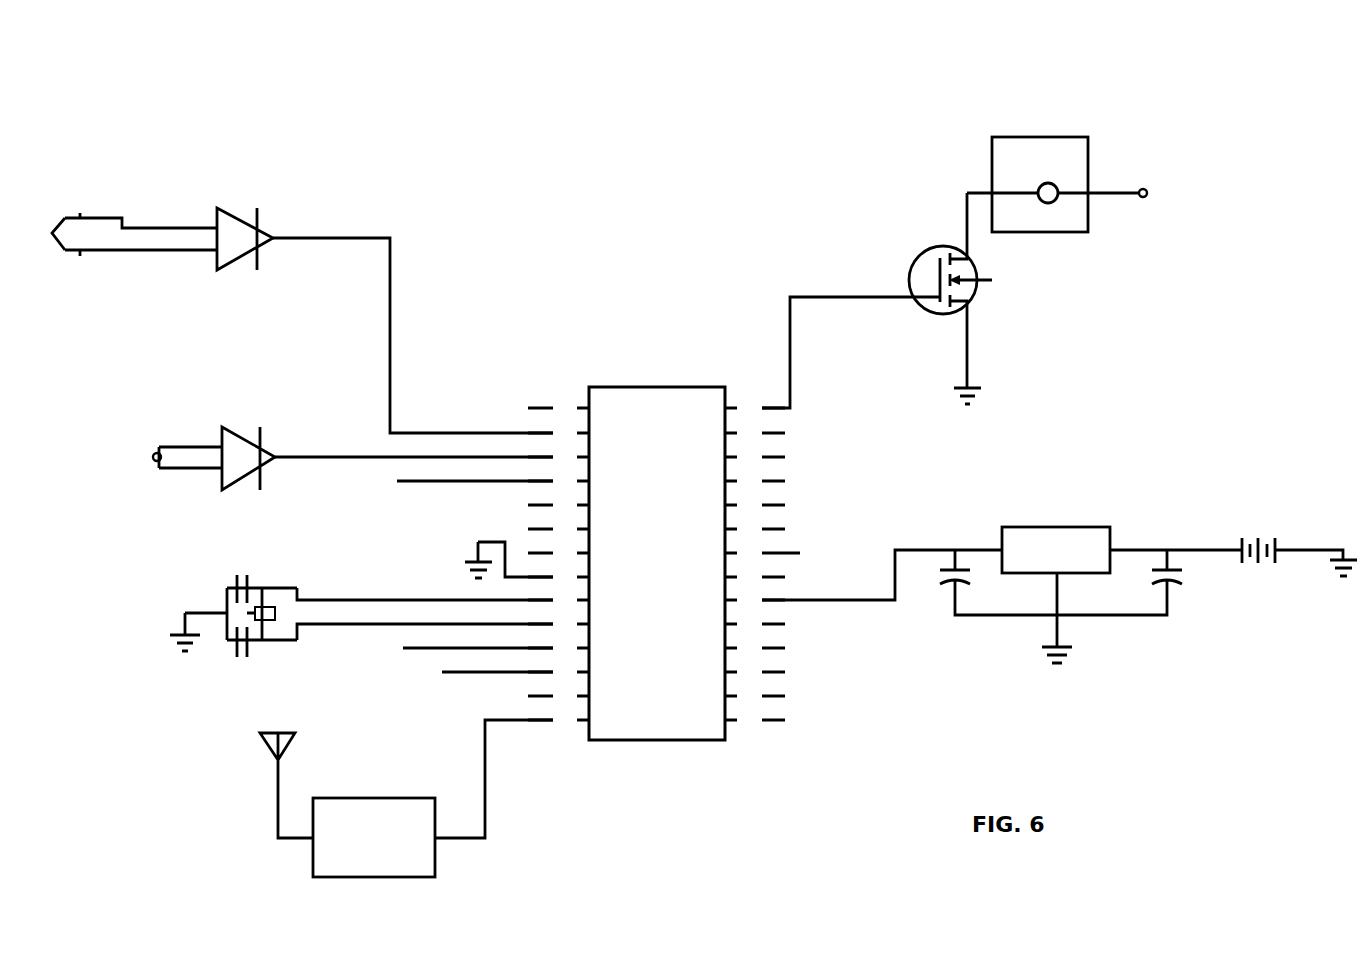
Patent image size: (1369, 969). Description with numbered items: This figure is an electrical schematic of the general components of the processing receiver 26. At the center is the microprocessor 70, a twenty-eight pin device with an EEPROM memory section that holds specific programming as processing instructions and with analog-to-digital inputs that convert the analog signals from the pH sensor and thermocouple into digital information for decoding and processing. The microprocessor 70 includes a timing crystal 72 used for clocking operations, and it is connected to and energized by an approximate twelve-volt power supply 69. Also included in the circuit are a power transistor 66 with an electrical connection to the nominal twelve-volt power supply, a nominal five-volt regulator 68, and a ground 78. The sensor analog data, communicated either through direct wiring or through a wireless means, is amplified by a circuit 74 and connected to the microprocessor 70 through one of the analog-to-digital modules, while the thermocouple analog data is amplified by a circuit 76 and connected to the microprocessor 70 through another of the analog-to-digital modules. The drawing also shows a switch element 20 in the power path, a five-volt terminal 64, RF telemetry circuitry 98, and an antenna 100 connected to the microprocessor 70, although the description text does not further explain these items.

The power switch 20 is at (1053, 78).
The processing receiver 26 is at (655, 293).
The 5V supply terminal 64 is at (1145, 186).
The power transistor 66 is at (916, 253).
The 5-volt regulator 68 is at (1060, 527).
The 12 volt power supply 69 is at (1287, 518).
The microprocessor 70 is at (694, 386).
The timing crystal 72 is at (185, 580).
The amplifier circuit for sensor data 74 is at (182, 392).
The amplifier circuit for thermocouple data 76 is at (137, 168).
The ground 78 is at (470, 560).
The RF telemetry circuitry 98 is at (397, 798).
The antenna 100 is at (256, 778).